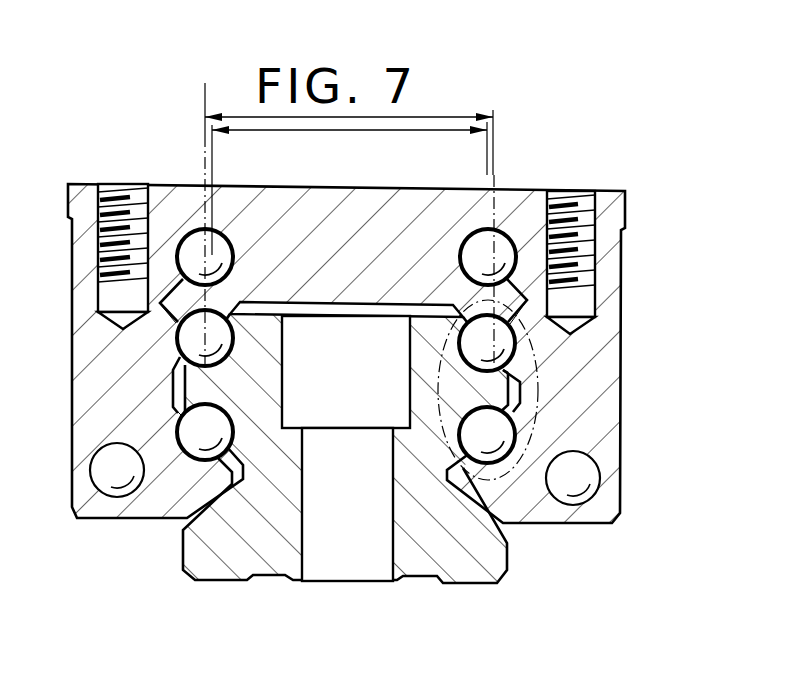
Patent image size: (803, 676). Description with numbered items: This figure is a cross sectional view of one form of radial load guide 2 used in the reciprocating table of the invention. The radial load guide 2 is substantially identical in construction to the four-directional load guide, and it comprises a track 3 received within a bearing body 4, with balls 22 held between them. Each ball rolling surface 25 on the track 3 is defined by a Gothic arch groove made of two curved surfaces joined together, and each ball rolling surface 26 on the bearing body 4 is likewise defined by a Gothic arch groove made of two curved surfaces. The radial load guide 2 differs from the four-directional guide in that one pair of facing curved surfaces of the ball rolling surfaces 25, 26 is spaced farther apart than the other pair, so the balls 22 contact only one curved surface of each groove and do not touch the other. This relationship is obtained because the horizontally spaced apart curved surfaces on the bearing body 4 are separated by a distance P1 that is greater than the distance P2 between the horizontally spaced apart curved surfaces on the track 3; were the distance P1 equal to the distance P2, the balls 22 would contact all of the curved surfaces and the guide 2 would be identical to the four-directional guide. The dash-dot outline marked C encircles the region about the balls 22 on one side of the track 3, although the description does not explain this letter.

The radial load guide 2 is at (636, 184).
The track 3 is at (483, 578).
The bearing body 4 is at (607, 296).
The balls 22 is at (450, 318).
The ball rolling surface 25 is at (200, 345).
The ball rolling surface 26 is at (203, 232).
The pitch circle C is at (525, 530).
The distance P1 is at (282, 118).
The distance P2 is at (338, 131).